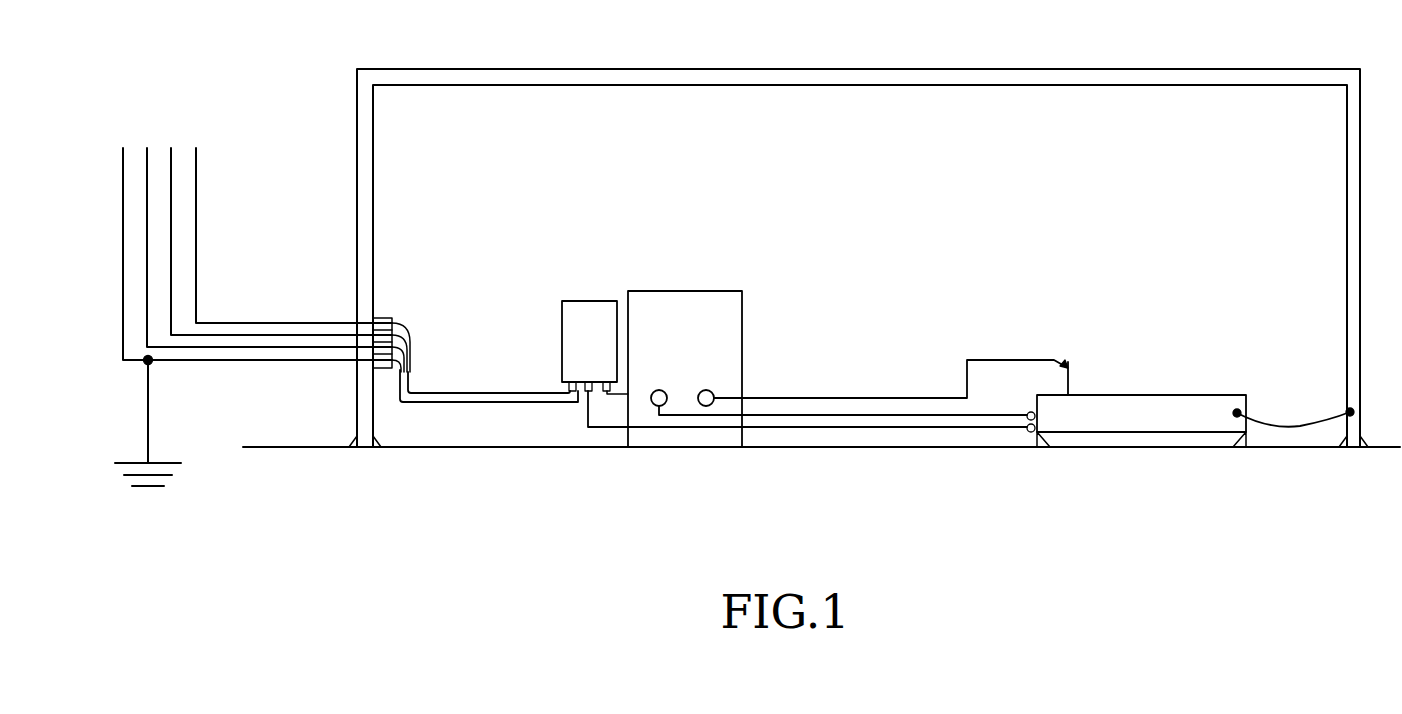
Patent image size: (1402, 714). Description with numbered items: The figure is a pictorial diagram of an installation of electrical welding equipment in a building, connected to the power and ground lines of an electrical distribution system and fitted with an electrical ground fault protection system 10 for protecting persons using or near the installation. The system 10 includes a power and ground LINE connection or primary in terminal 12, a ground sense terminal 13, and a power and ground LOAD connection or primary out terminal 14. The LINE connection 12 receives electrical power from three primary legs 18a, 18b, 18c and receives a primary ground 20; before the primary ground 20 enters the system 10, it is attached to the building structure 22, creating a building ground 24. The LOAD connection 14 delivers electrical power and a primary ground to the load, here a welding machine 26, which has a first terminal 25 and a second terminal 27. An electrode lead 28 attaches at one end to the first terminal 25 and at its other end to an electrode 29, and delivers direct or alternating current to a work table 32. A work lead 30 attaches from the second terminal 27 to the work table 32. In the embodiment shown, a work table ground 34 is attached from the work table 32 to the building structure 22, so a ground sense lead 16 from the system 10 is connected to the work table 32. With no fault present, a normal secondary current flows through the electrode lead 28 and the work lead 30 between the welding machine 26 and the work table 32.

The electrical ground fault protection system 10 is at (584, 288).
The primary in terminal 12 is at (572, 380).
The ground sense terminal 13 is at (585, 380).
The primary out terminal 14 is at (590, 380).
The ground sense lead 16 is at (588, 413).
The primary leg 18a is at (150, 156).
The primary leg 18b is at (170, 157).
The primary leg 18c is at (195, 158).
The primary ground 20 is at (130, 360).
The building structure 22 is at (532, 75).
The building ground 24 is at (383, 372).
The first terminal 25 is at (706, 407).
The welding machine 26 is at (688, 291).
The second terminal 27 is at (659, 407).
The electrode lead 28 is at (987, 360).
The electrode 29 is at (1062, 357).
The work lead 30 is at (877, 415).
The work table 32 is at (1143, 395).
The work table ground 34 is at (1300, 426).